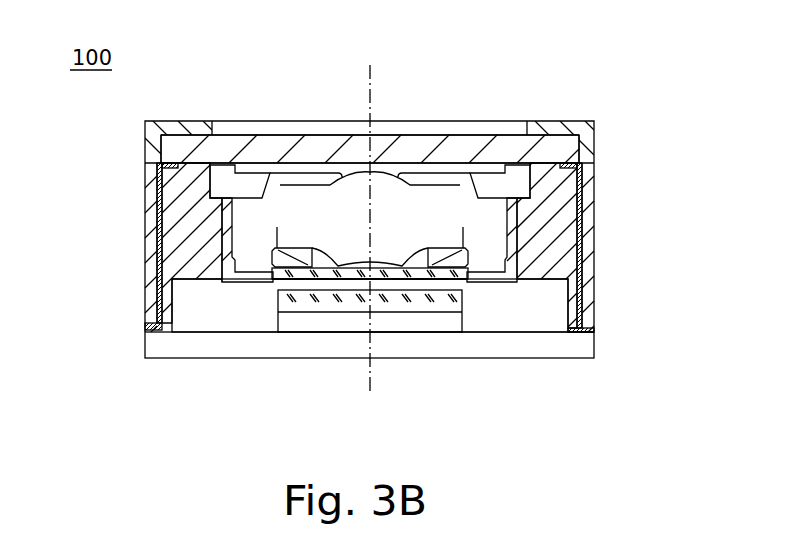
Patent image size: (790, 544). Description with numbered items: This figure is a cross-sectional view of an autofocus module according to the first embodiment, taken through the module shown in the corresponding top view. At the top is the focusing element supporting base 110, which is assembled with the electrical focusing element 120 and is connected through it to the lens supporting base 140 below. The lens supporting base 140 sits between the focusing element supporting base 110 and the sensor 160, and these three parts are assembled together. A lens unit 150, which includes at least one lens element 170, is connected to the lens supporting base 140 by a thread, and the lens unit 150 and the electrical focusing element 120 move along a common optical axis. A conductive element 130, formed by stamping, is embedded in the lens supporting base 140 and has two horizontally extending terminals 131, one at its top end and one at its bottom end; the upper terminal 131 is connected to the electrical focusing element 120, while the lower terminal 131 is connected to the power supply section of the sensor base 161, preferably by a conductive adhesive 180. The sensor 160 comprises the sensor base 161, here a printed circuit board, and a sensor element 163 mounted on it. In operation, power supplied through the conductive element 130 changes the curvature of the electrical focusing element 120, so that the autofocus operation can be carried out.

The focusing element supporting base 110 is at (588, 133).
The electrical focusing element 120 is at (513, 148).
The conductive element 130 is at (582, 216).
The terminal 131 is at (580, 167).
The lens supporting base 140 is at (572, 260).
The lens unit 150 is at (487, 215).
The sensor 160 is at (550, 404).
The sensor base 161 is at (510, 345).
The sensor element 163 is at (412, 305).
The lens element 170 is at (385, 197).
The conductive adhesive 180 is at (595, 330).